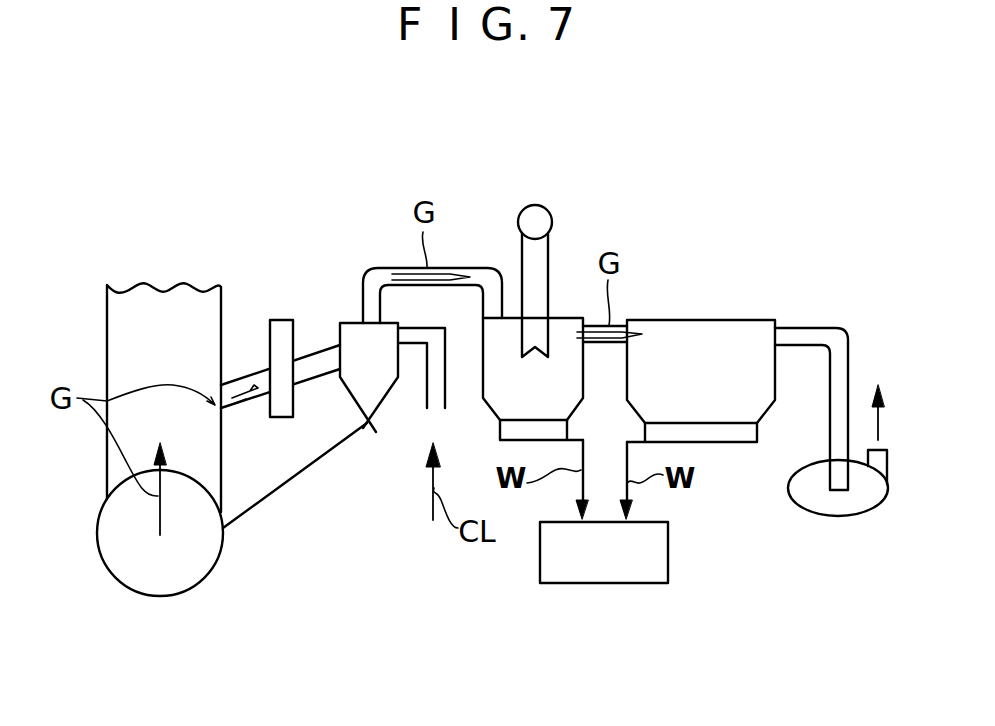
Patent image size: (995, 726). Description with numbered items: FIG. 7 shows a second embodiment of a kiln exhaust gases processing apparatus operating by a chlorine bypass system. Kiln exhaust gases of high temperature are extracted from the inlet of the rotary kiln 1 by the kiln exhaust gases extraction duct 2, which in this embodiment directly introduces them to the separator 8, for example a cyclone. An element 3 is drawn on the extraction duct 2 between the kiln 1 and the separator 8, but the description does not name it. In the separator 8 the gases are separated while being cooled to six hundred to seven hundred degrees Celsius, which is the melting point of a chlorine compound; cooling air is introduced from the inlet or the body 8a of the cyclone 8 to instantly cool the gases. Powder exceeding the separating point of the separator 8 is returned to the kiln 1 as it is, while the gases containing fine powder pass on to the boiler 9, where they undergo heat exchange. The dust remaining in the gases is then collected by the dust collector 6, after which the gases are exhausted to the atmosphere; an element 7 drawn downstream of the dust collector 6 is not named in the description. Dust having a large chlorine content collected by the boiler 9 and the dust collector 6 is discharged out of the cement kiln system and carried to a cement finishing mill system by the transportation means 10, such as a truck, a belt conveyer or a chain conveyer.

The rotary kiln 1 is at (97, 548).
The kiln exhaust gases extraction duct 2 is at (246, 378).
The heat exchanger 3 is at (283, 320).
The dust collector 6 is at (729, 320).
The exhaust blower 7 is at (872, 508).
The separator 8 is at (347, 320).
The body of the cyclone 8a is at (376, 430).
The boiler 9 is at (572, 318).
The transportation means 10 is at (668, 545).